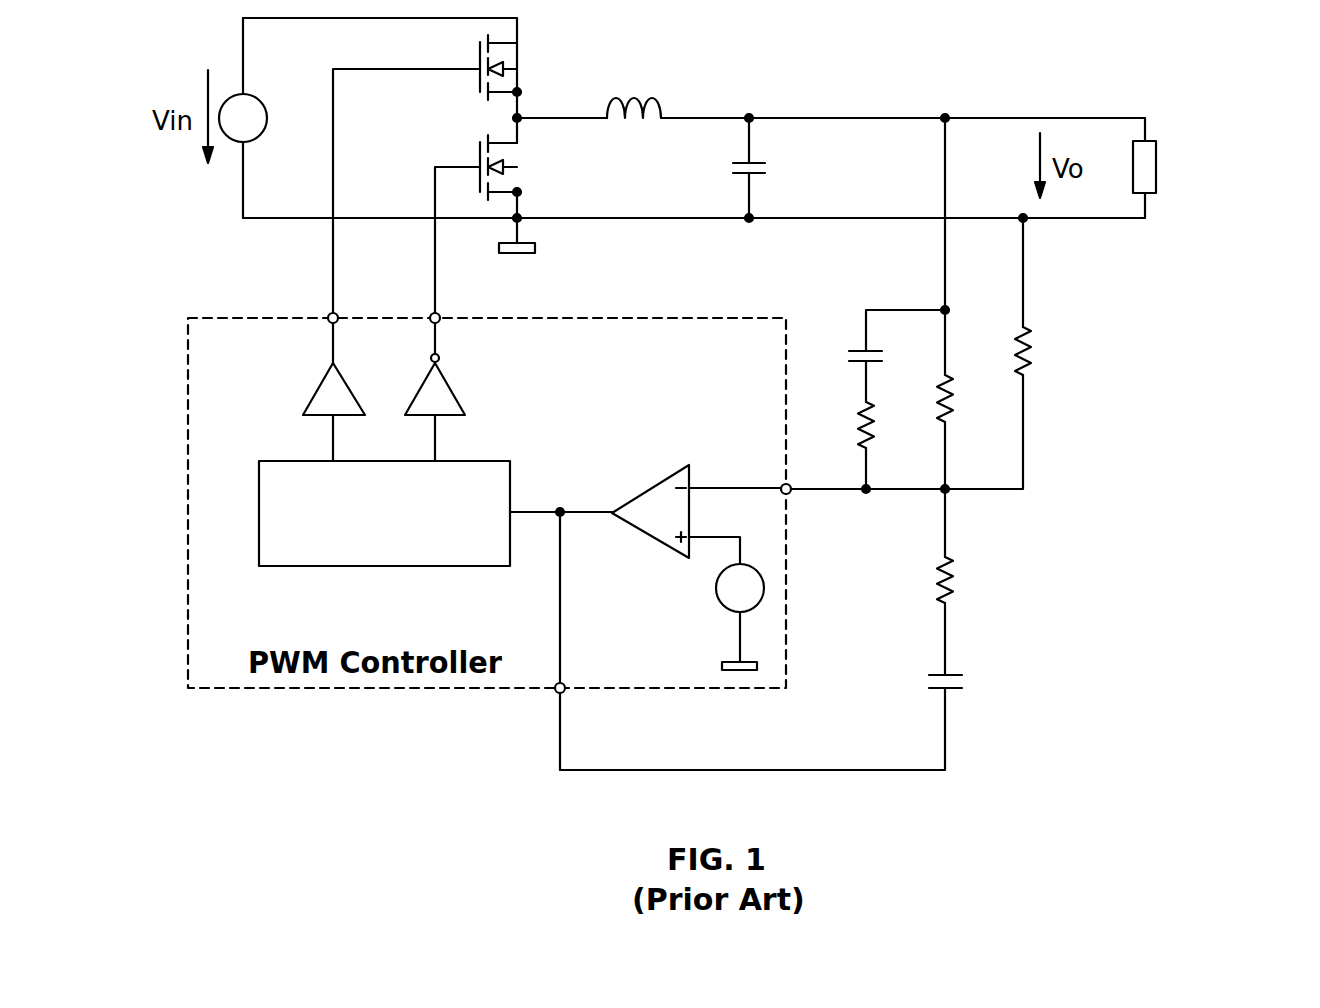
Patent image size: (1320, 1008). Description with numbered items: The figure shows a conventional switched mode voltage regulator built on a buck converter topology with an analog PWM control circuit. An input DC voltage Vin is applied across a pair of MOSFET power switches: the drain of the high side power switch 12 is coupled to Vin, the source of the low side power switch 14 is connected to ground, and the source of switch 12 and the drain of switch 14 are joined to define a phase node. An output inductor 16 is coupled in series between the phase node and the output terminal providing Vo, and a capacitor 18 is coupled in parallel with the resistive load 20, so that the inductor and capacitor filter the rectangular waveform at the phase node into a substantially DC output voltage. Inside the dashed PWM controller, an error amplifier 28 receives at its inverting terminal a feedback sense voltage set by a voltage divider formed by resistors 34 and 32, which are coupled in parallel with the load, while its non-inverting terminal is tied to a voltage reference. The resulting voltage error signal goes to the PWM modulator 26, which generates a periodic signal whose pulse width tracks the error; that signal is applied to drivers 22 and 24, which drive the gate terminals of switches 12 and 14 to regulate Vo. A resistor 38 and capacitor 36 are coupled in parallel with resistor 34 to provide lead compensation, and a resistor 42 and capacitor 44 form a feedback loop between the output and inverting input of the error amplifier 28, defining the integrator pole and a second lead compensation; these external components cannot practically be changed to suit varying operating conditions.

The high side power switch 12 is at (517, 80).
The low side power switch 14 is at (517, 178).
The output inductor 16 is at (633, 96).
The capacitor 18 is at (763, 167).
The resistive load 20 is at (1158, 148).
The driver 22 is at (317, 390).
The driver 24 is at (453, 388).
The PWM modulator 26 is at (452, 461).
The error amplifier 28 is at (652, 488).
The resistor 32 is at (1040, 345).
The resistor 34 is at (950, 398).
The capacitor 36 is at (850, 354).
The resistor 38 is at (858, 423).
The resistor 42 is at (952, 578).
The capacitor 44 is at (960, 682).